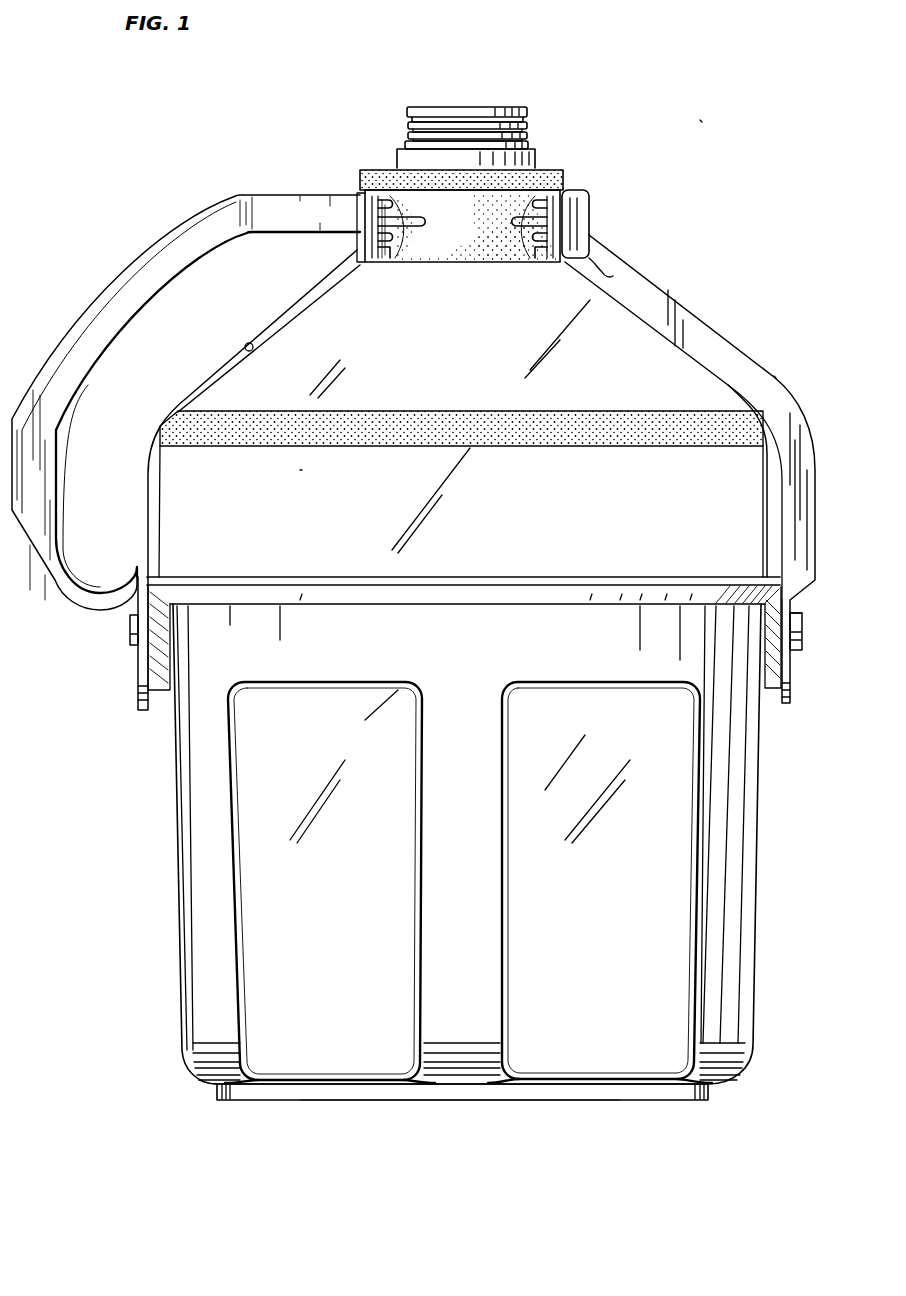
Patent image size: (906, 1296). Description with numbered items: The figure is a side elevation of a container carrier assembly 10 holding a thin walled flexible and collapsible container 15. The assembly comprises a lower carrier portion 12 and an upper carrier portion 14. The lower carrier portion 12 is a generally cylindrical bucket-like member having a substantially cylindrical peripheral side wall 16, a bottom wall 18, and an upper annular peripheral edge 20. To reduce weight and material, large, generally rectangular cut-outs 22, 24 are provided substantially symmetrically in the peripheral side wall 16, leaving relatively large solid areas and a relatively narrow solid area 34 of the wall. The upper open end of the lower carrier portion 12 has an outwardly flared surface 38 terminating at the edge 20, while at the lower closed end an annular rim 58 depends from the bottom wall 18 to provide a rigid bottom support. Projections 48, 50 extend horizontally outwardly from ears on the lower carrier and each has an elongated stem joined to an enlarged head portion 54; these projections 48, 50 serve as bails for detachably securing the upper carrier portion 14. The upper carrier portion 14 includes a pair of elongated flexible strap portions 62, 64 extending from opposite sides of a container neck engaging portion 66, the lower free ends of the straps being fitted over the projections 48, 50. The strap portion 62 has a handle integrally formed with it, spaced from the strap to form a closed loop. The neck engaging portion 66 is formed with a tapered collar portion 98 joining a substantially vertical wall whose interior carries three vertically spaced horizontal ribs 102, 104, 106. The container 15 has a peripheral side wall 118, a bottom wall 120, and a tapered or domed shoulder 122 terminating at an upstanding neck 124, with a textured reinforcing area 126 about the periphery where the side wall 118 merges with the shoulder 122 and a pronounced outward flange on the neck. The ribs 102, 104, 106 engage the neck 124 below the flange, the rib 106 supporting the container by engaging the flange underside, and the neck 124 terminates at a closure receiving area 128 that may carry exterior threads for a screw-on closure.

The container carrier assembly 10 is at (719, 129).
The lower carrier portion 12 is at (165, 871).
The upper carrier portion 14 is at (734, 326).
The container 15 is at (531, 503).
The peripheral side wall 16 is at (745, 863).
The bottom wall 18 is at (217, 1088).
The upper annular peripheral edge 20 is at (263, 578).
The cut-out 22 is at (403, 853).
The cut-out 24 is at (528, 900).
The narrow solid area 34 is at (424, 768).
The outwardly flared surface 38 is at (545, 592).
The projection 48 is at (128, 646).
The projection 50 is at (806, 622).
The enlarged head portion 54 is at (130, 632).
The annular rim 58 is at (390, 1099).
The strap portion 62 is at (297, 291).
The strap portion 64 is at (779, 376).
The container neck engaging portion 66 is at (585, 189).
The tapered collar portion 98 is at (606, 275).
The horizontal rib 102 is at (527, 216).
The horizontal rib 104 is at (530, 241).
The horizontal rib 106 is at (381, 253).
The peripheral side wall 118 is at (163, 534).
The bottom wall 120 is at (283, 1080).
The shoulder 122 is at (247, 343).
The neck 124 is at (536, 122).
The textured reinforcing area 126 is at (376, 180).
The closure receiving area 128 is at (412, 124).